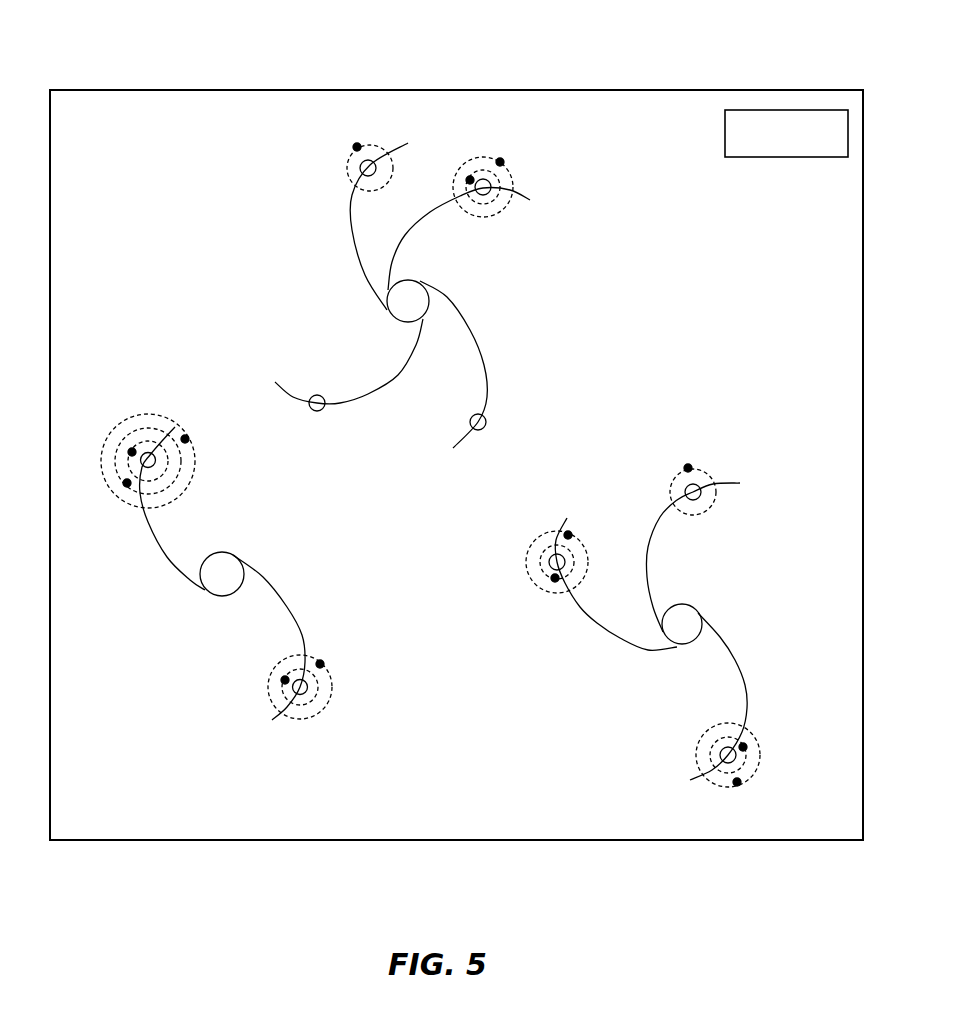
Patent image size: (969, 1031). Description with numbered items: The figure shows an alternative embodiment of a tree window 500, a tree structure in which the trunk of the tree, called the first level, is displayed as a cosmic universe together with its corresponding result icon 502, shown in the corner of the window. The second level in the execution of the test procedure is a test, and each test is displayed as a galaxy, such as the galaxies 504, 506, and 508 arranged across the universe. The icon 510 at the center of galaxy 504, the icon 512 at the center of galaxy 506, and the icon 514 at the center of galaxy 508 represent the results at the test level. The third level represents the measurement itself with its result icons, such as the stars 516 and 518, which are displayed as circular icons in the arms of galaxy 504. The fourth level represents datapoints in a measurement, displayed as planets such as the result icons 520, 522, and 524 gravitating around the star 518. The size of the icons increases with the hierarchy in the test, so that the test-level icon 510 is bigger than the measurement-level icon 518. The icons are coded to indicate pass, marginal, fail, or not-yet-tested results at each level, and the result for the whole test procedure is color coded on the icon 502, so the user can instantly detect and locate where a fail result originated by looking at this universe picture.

The tree window 500 is at (138, 80).
The result icon 502 is at (832, 110).
The galaxy 504 is at (234, 557).
The galaxy 506 is at (678, 625).
The galaxy 508 is at (361, 295).
The icon 510 is at (220, 557).
The icon 512 is at (688, 635).
The icon 514 is at (412, 287).
The result icon 516 is at (308, 687).
The result icon 518 is at (155, 460).
The result icon 520 is at (185, 439).
The result icon 522 is at (132, 452).
The result icon 524 is at (127, 483).